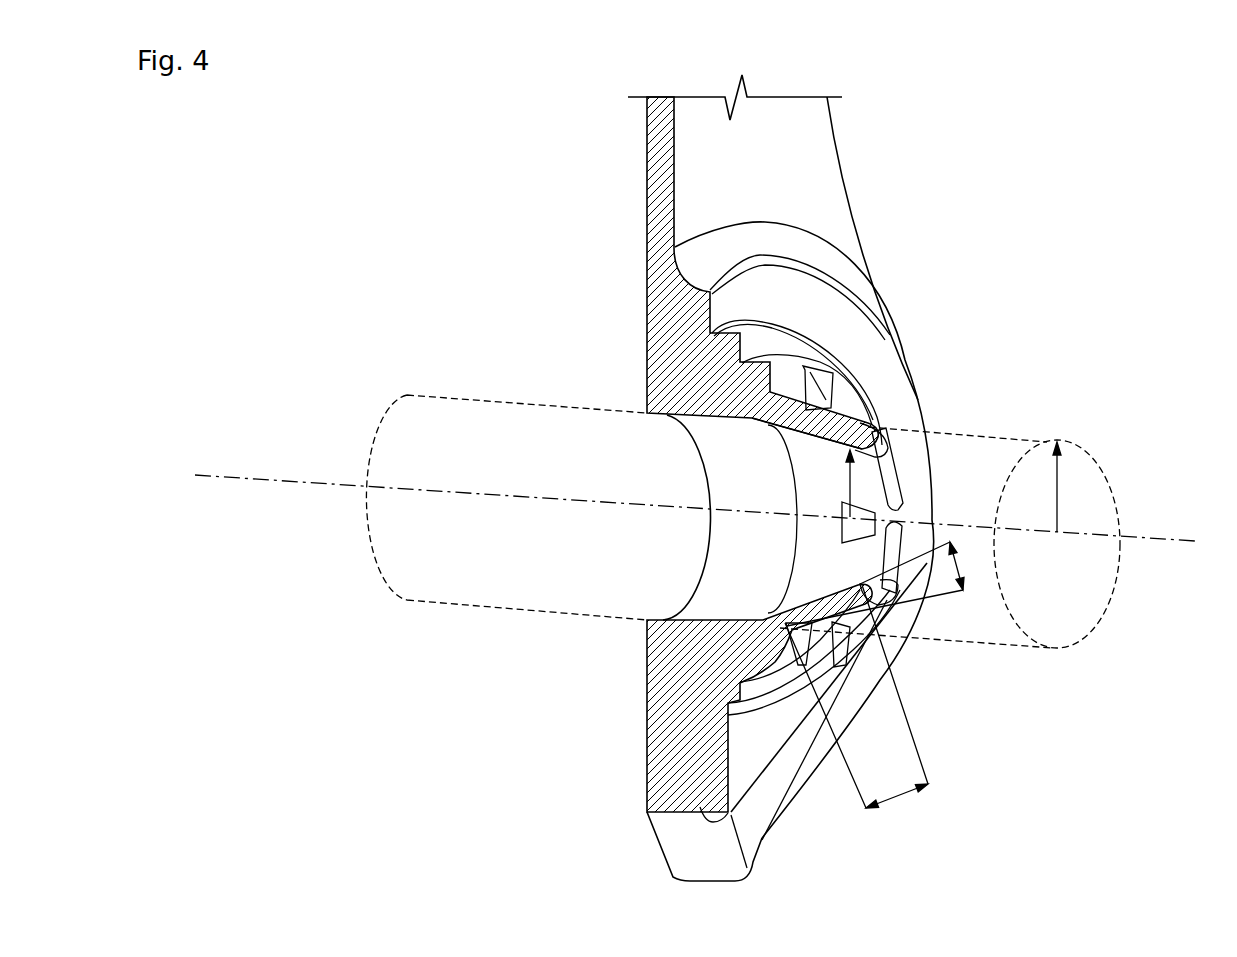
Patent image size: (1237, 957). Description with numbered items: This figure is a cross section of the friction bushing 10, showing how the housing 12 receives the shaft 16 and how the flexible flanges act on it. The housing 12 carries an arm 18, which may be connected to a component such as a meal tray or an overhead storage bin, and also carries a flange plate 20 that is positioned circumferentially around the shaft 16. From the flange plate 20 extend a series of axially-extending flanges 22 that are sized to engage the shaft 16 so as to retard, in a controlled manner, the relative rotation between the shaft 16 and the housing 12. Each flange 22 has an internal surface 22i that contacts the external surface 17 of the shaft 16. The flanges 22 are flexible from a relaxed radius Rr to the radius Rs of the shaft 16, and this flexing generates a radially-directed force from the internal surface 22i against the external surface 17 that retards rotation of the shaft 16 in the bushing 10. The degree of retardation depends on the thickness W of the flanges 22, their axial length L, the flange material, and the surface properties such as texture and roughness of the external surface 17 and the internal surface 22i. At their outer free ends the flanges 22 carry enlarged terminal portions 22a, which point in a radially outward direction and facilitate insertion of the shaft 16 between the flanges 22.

The bushing 10 is at (915, 118).
The housing 12 is at (765, 820).
The shaft 16 is at (362, 528).
The external surface 17 is at (1017, 441).
The arm 18 is at (660, 172).
The flange plate 20 is at (668, 717).
The flanges 22 is at (822, 400).
The enlarged terminal portions 22a is at (877, 447).
The internal surface 22i is at (857, 447).
The relaxed radius Rr is at (857, 482).
The radius of the shaft Rs is at (1058, 497).
The thickness W is at (968, 592).
The axial length L is at (907, 792).